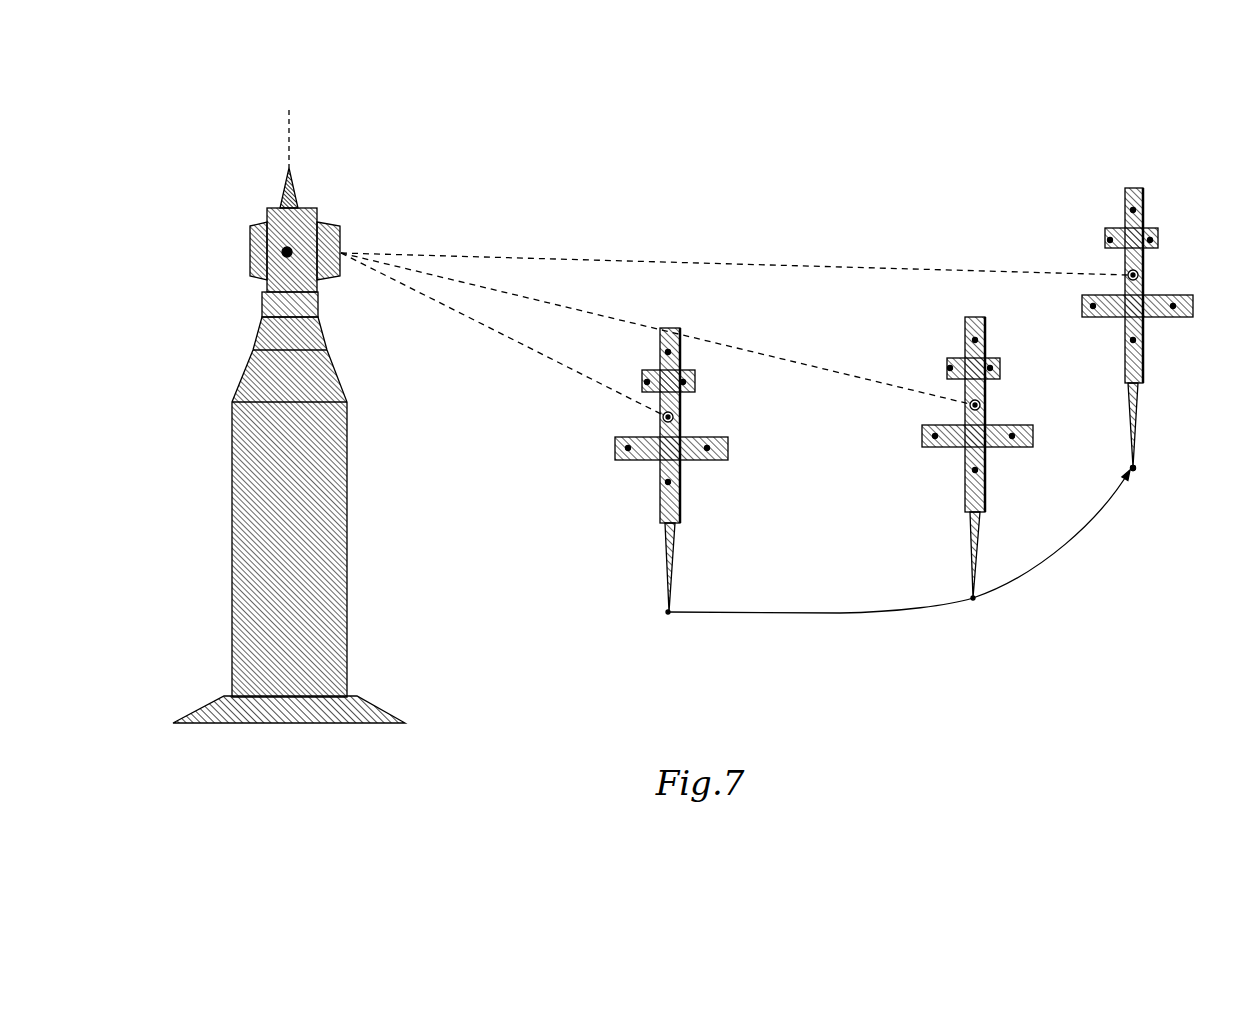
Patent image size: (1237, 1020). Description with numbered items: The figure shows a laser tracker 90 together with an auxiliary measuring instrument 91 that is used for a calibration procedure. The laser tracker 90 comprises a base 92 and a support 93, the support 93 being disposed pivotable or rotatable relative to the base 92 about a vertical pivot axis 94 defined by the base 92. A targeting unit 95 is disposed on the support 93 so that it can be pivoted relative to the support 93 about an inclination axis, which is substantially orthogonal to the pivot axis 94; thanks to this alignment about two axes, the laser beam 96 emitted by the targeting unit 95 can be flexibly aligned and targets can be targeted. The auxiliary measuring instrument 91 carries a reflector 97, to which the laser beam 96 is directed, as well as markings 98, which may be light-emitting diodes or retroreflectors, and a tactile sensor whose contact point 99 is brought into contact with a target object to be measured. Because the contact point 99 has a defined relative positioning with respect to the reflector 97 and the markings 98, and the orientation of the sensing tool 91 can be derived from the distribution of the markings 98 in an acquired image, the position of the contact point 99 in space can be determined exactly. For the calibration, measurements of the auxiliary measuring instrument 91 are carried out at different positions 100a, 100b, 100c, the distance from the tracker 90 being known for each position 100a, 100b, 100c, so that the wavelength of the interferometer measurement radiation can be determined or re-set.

The laser tracker 90 is at (265, 152).
The auxiliary measuring instrument 91 is at (1120, 163).
The base 92 is at (273, 307).
The support 93 is at (297, 230).
The pivot axis 94 is at (290, 143).
The targeting unit 95 is at (258, 230).
The laser beam 96 is at (637, 262).
The reflector 97 is at (1140, 273).
The markings 98 is at (1137, 202).
The contact point 99 is at (1135, 465).
The position 100a is at (765, 633).
The position 100b is at (997, 569).
The position 100c is at (1184, 498).